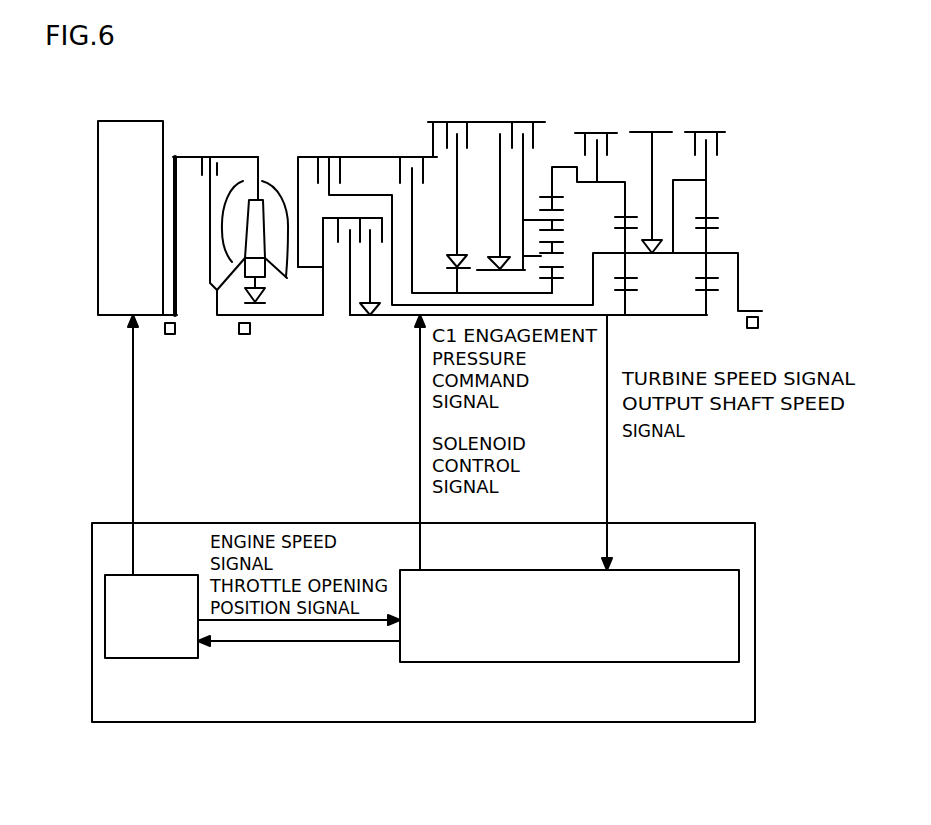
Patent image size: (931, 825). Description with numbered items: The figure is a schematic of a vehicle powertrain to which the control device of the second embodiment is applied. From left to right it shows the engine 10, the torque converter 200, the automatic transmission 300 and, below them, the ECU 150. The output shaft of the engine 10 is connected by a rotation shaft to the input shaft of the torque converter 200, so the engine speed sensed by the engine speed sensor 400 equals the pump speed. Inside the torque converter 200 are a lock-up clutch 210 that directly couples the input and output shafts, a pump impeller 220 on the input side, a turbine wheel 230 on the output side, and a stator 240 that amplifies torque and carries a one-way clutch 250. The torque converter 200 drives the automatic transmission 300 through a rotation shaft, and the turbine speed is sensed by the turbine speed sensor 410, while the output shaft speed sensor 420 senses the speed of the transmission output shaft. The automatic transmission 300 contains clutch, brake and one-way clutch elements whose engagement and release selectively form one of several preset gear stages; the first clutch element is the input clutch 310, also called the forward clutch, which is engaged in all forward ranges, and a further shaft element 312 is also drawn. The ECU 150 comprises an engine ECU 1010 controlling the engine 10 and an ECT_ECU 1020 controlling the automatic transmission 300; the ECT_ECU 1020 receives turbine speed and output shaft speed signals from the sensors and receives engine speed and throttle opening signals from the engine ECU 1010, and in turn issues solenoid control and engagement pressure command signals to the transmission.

The engine 10 is at (136, 121).
The ECU 150 is at (452, 622).
The torque converter 200 is at (243, 233).
The lock-up clutch 210 is at (200, 178).
The pump impeller 220 is at (283, 278).
The turbine wheel 230 is at (243, 180).
The stator 240 is at (238, 284).
The one-way clutch 250 is at (266, 299).
The automatic transmission 300 is at (727, 75).
The input clutch 310 is at (368, 218).
The intermediate shaft 312 is at (395, 163).
The engine speed sensor 400 is at (171, 334).
The turbine speed sensor 410 is at (245, 334).
The output shaft speed sensor 420 is at (746, 323).
The engine ECU 1010 is at (140, 659).
The ECT_ECU 1020 is at (555, 663).